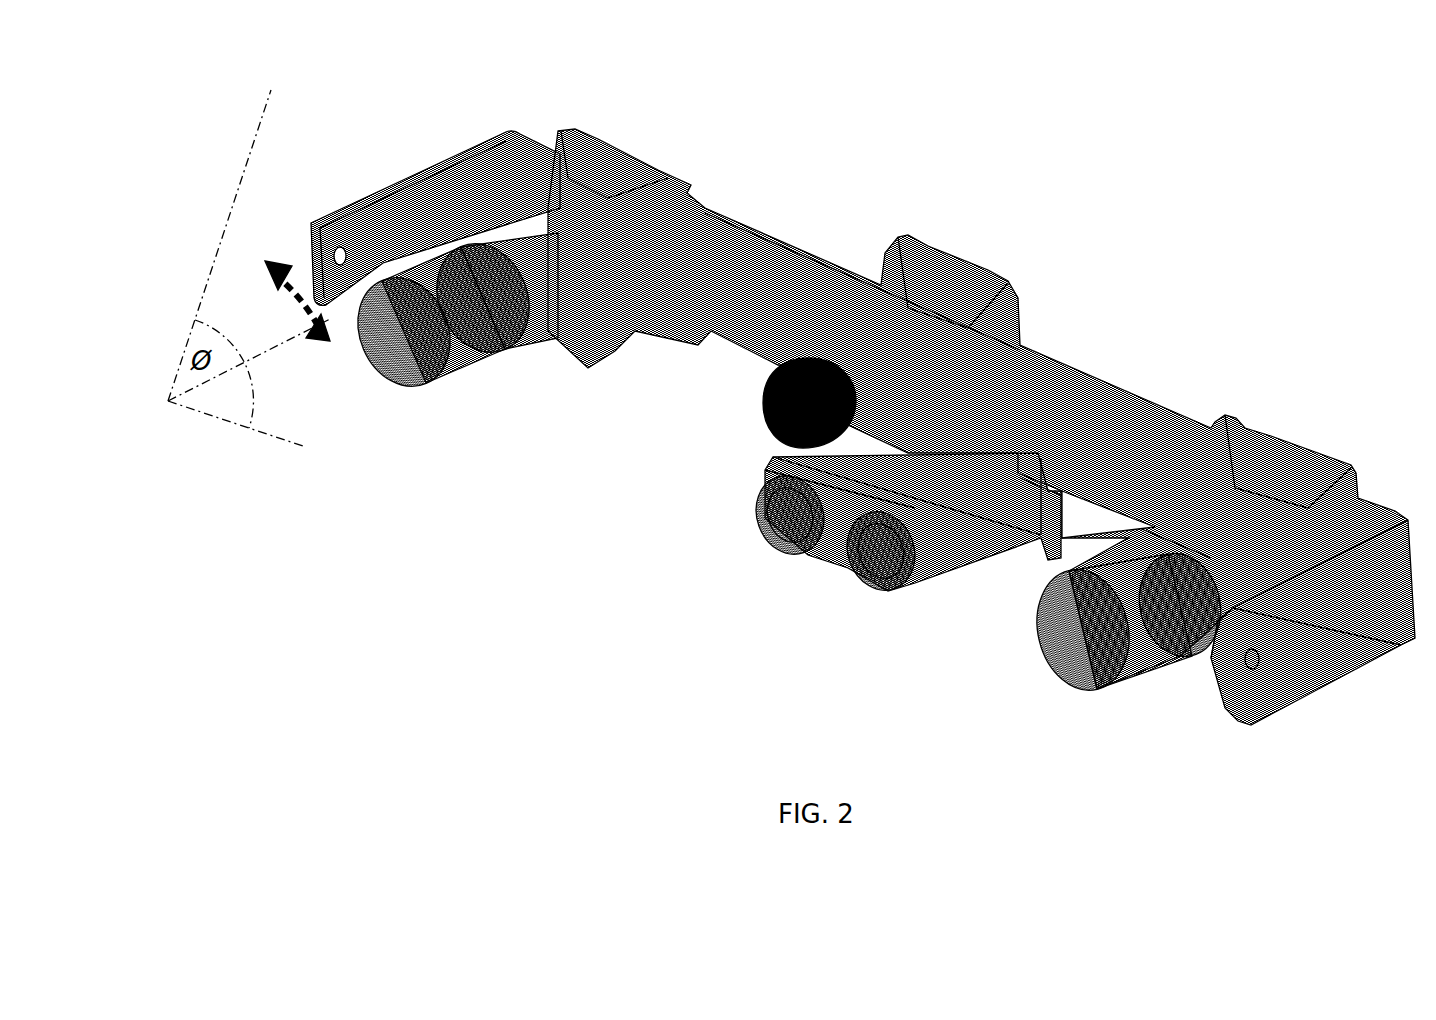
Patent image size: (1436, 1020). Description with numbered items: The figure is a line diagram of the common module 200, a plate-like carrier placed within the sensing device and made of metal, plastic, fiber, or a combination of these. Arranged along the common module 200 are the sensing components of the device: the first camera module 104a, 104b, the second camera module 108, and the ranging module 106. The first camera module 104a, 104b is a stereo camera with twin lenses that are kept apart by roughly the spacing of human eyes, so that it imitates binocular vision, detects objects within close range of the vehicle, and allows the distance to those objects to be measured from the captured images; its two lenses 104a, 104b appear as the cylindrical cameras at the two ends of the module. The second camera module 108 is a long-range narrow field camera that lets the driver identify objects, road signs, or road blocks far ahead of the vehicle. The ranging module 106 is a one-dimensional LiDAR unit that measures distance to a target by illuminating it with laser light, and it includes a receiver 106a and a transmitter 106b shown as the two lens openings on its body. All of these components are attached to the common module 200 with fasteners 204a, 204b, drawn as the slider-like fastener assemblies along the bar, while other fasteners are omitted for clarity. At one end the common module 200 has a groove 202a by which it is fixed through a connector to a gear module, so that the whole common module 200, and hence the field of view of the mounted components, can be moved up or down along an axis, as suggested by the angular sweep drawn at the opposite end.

The common module 200 is at (423, 158).
The fastener 204a is at (533, 133).
The fastener 204b is at (623, 145).
The groove 202a is at (1290, 698).
The first camera module lens 104a is at (397, 380).
The first camera module lens 104b is at (1058, 675).
The ranging module 106 is at (823, 533).
The receiver 106a is at (767, 537).
The transmitter 106b is at (873, 583).
The second camera module 108 is at (753, 410).